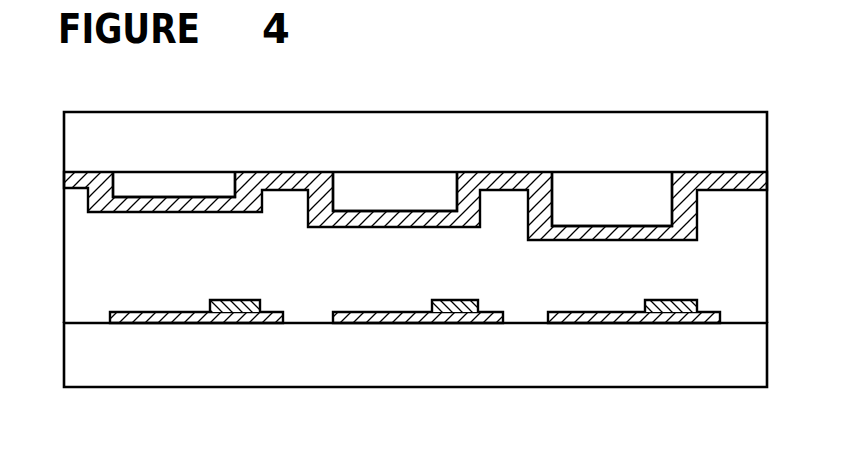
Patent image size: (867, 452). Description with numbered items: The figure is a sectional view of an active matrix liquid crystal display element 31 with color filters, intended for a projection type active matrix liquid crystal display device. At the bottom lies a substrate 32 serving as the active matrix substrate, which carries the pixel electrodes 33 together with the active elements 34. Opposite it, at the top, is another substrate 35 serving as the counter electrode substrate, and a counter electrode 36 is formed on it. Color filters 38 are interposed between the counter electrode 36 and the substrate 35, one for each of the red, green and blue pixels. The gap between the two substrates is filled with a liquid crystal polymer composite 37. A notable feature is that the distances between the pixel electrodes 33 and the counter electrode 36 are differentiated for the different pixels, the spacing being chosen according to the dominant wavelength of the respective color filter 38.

The active matrix liquid crystal display element 31 is at (280, 113).
The substrate 32 is at (392, 352).
The pixel electrodes 33 is at (170, 323).
The active elements 34 is at (268, 323).
The substrate 35 is at (613, 156).
The counter electrode 36 is at (498, 176).
The liquid crystal polymer composite 37 is at (525, 295).
The color filters 38 is at (213, 186).